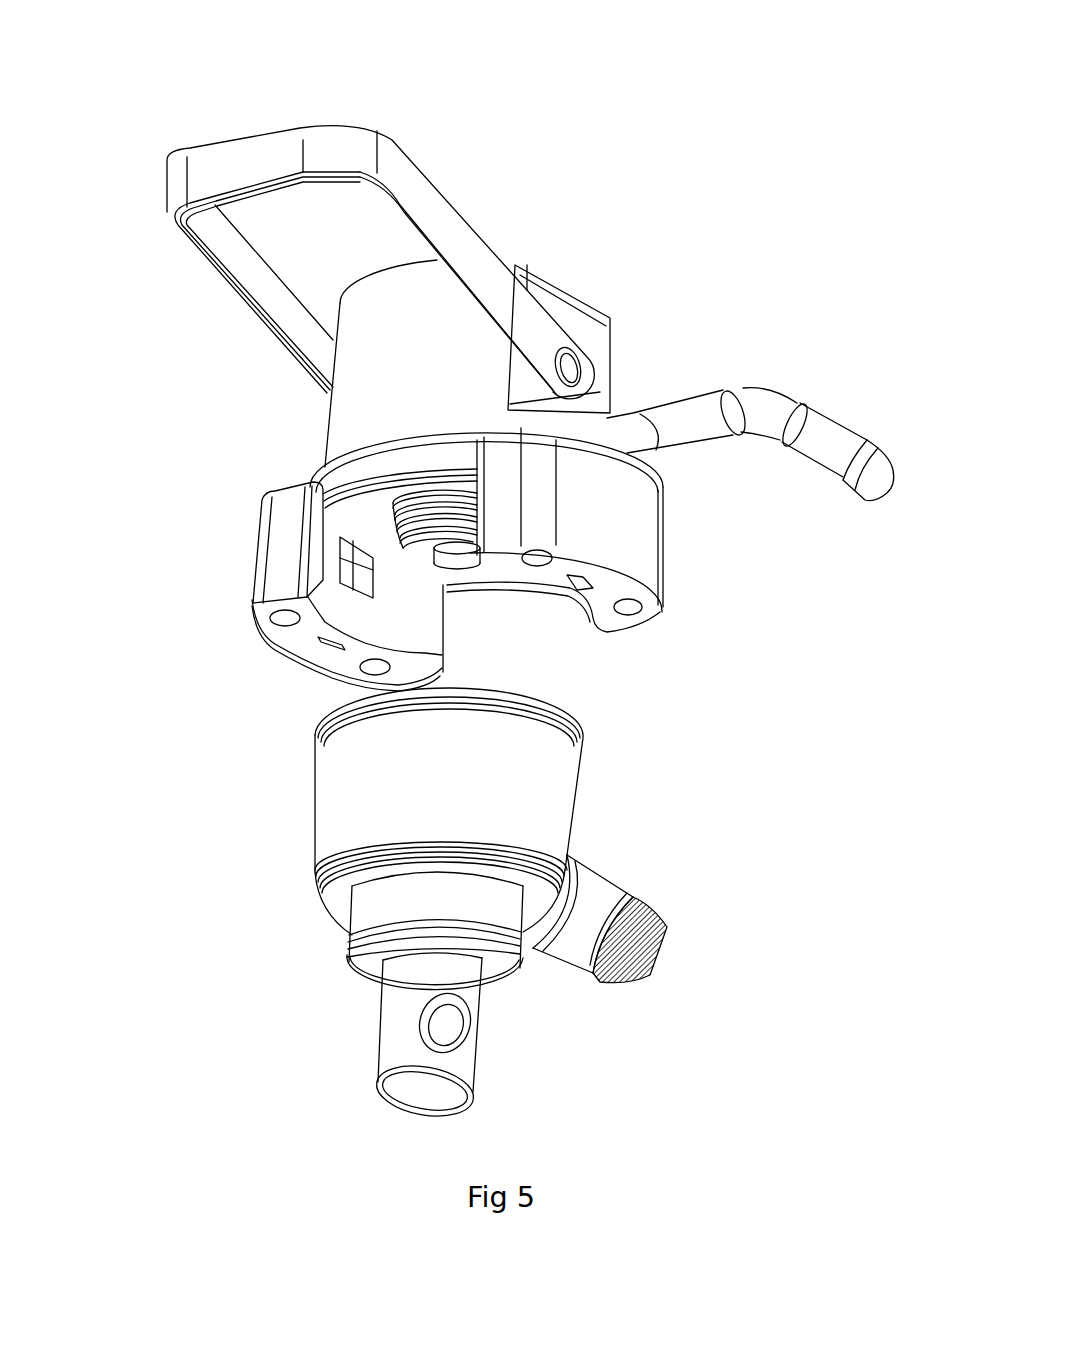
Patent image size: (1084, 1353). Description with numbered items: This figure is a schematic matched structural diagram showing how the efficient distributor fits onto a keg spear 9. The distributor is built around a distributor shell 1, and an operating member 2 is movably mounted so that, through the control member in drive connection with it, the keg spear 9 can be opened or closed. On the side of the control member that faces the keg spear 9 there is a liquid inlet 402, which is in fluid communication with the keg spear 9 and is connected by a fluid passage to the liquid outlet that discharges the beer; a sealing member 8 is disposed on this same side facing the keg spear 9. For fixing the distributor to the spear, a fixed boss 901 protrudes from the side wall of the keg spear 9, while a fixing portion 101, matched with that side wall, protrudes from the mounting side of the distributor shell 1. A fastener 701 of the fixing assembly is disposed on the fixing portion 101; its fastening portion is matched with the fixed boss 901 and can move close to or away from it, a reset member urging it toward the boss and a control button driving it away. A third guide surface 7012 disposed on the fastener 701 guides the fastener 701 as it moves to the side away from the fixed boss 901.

The distributor shell 1 is at (373, 377).
The operating member 2 is at (258, 150).
The sealing member 8 is at (428, 535).
The fastener 701 is at (318, 513).
The third guide surface 7012 is at (340, 577).
The fixing portion 101 is at (607, 523).
The liquid inlet 402 is at (447, 551).
The keg spear 9 is at (313, 800).
The fixed boss 901 is at (583, 738).